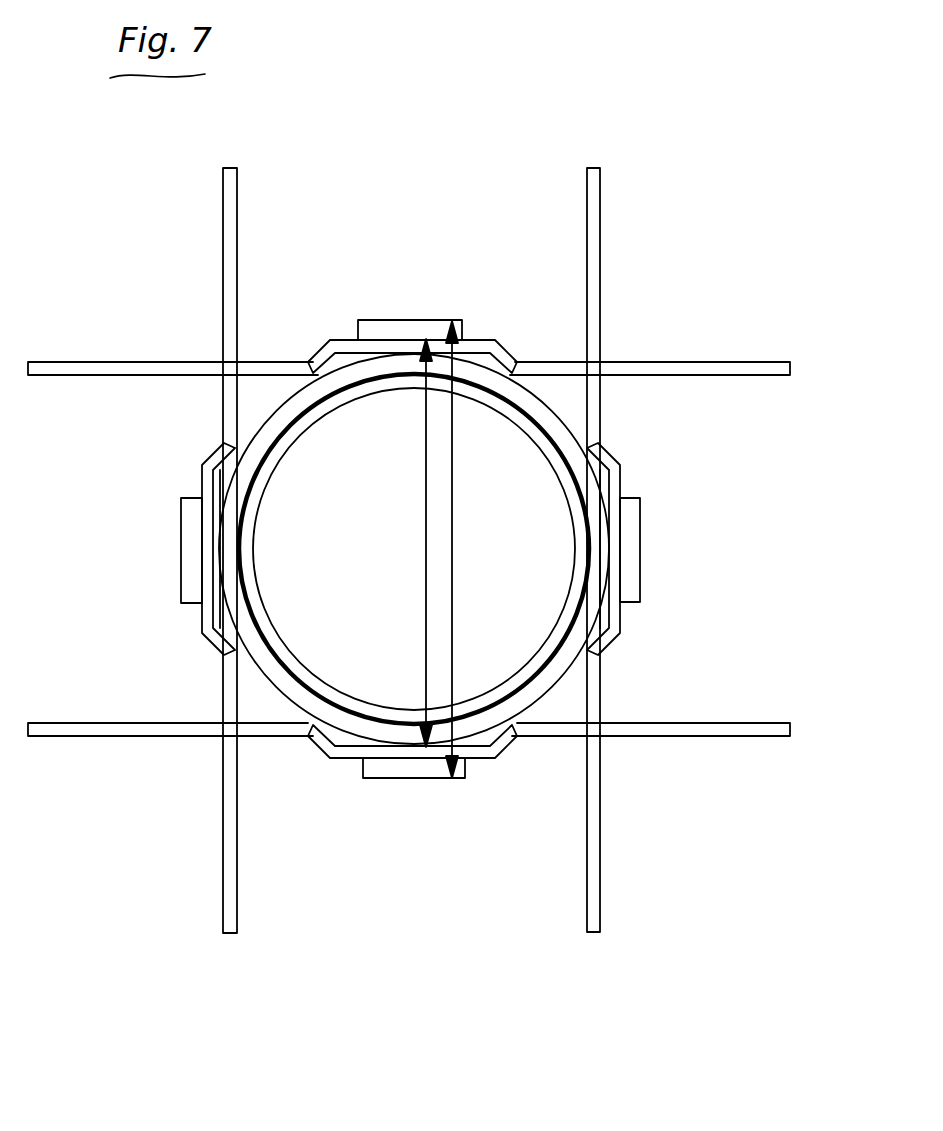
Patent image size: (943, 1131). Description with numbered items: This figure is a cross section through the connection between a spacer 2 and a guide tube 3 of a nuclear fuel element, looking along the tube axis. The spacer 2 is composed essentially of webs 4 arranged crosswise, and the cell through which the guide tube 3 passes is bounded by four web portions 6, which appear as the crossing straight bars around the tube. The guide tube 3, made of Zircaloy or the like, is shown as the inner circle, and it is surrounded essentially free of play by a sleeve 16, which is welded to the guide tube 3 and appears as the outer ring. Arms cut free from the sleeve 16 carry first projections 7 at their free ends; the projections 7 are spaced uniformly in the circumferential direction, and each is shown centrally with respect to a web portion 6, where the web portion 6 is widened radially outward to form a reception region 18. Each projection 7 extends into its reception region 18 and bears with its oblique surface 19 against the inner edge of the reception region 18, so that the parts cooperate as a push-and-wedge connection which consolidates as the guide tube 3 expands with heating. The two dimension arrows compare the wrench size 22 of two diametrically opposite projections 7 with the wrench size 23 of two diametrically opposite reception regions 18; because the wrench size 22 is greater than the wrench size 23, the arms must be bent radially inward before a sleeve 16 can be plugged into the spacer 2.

The spacer 2 is at (612, 267).
The guide tube 3 is at (410, 712).
The web 4 is at (595, 166).
The web portion 6 is at (268, 362).
The first projection 7 is at (388, 312).
The sleeve 16 is at (548, 688).
The reception region 18 is at (437, 333).
The oblique surface 19 is at (370, 333).
The wrench size 22 is at (452, 533).
The wrench size 23 is at (425, 578).